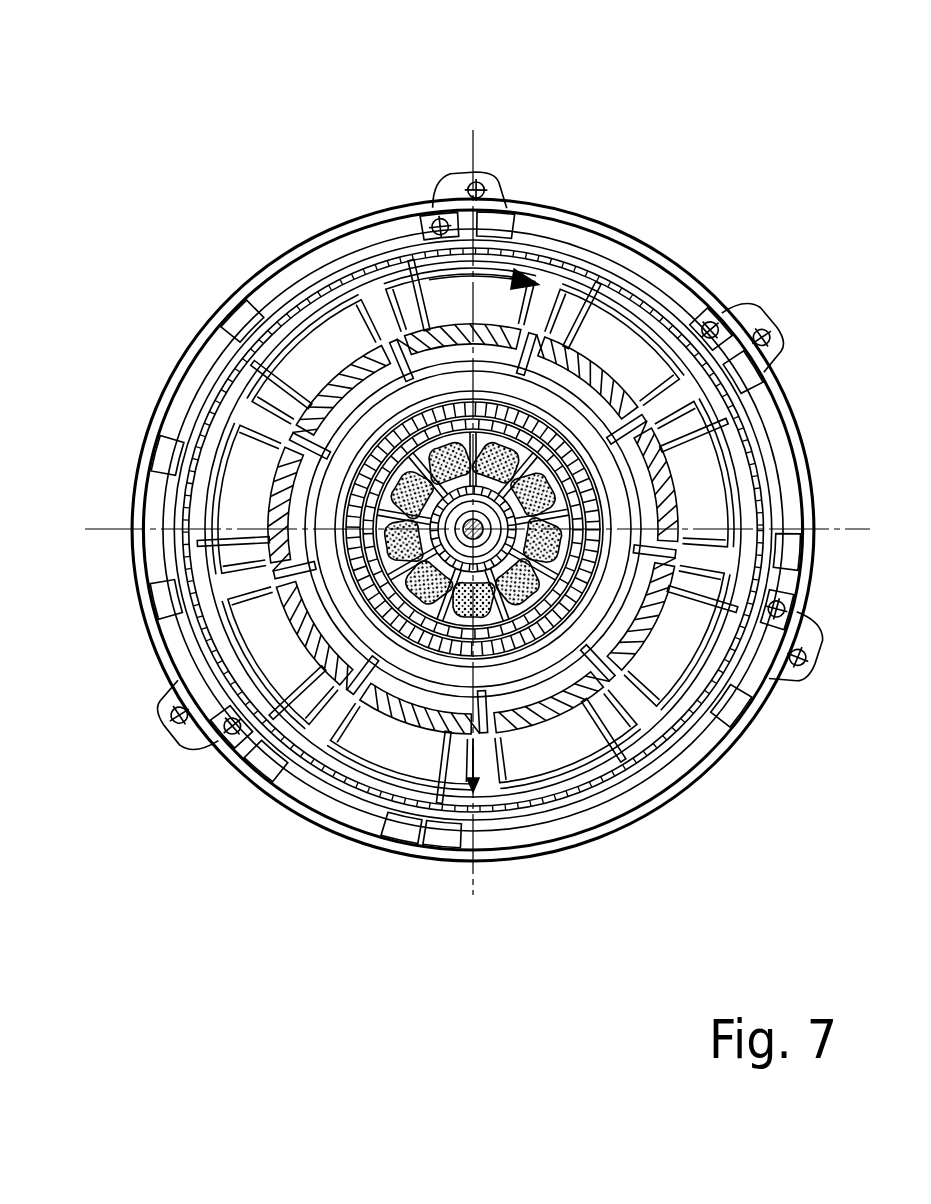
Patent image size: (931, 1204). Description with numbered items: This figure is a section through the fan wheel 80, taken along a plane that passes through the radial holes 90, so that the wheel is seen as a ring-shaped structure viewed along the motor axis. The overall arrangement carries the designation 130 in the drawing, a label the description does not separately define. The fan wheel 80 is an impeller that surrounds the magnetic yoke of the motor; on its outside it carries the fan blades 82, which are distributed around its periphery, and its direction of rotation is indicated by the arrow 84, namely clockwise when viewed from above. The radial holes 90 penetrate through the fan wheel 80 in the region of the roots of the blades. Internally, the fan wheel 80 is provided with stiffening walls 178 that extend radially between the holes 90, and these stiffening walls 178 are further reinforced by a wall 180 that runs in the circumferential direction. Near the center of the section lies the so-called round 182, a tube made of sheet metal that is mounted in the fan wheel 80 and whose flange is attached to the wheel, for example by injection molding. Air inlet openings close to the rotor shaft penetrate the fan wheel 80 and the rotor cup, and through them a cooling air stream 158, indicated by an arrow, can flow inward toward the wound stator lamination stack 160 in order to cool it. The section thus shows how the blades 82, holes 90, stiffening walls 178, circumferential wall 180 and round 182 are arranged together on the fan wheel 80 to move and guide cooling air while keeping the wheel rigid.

The clutch assembly 130 is at (349, 140).
The fan wheel 80 is at (238, 357).
The fan blades 82 is at (328, 303).
The rotation direction 84 is at (530, 266).
The radial holes 90 is at (407, 343).
The cooling air stream 158 is at (490, 825).
The wound stator lamination stack 160 is at (473, 400).
The stiffening walls 178 is at (527, 345).
The circumferential wall 180 is at (540, 632).
The round 182 is at (593, 413).